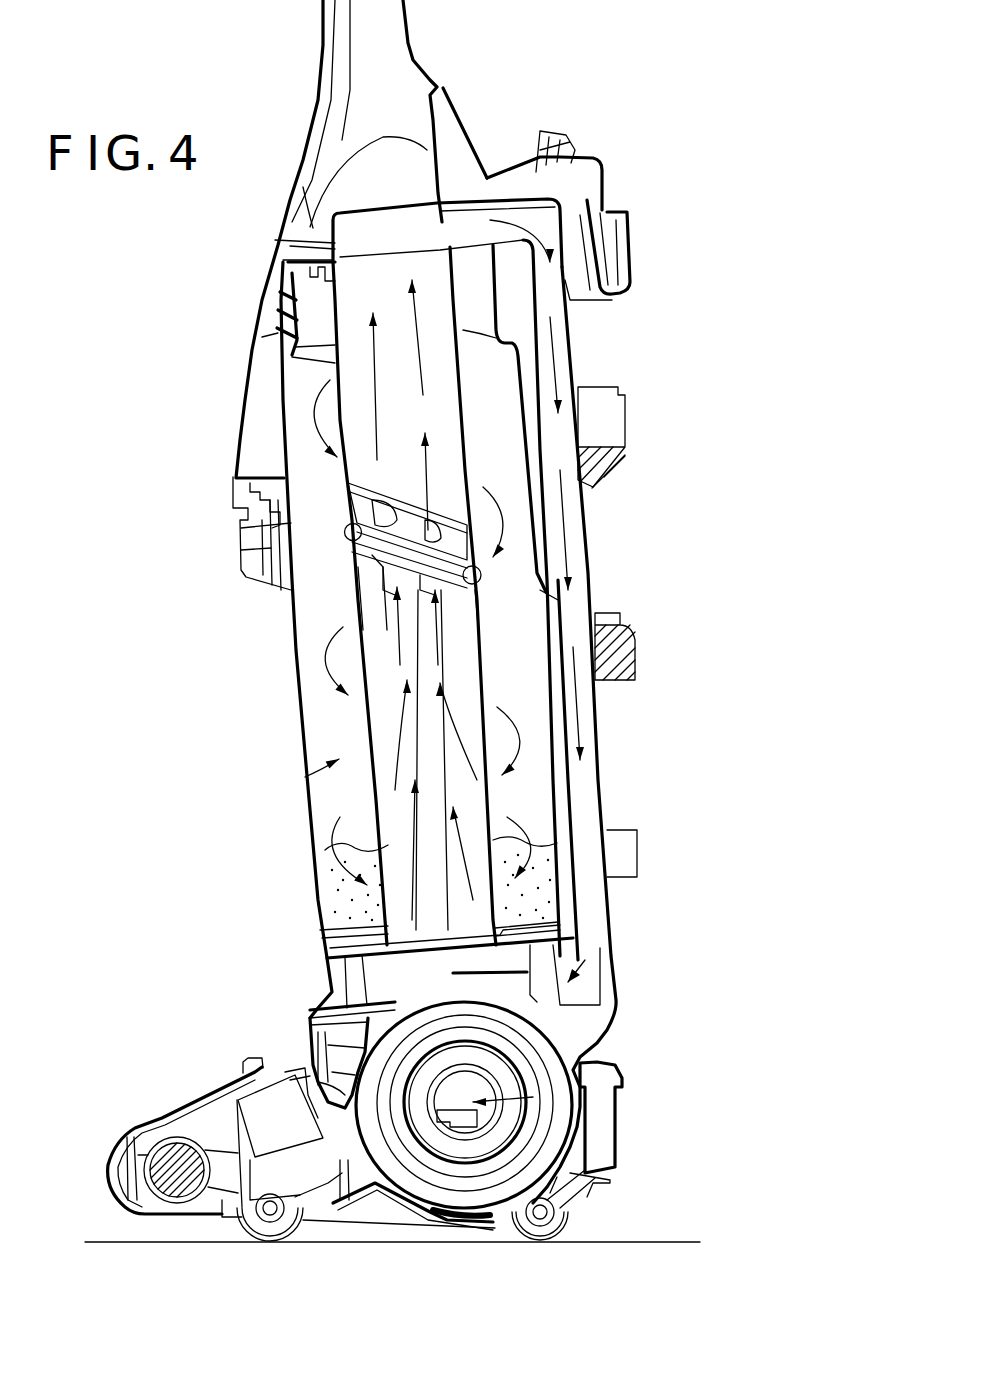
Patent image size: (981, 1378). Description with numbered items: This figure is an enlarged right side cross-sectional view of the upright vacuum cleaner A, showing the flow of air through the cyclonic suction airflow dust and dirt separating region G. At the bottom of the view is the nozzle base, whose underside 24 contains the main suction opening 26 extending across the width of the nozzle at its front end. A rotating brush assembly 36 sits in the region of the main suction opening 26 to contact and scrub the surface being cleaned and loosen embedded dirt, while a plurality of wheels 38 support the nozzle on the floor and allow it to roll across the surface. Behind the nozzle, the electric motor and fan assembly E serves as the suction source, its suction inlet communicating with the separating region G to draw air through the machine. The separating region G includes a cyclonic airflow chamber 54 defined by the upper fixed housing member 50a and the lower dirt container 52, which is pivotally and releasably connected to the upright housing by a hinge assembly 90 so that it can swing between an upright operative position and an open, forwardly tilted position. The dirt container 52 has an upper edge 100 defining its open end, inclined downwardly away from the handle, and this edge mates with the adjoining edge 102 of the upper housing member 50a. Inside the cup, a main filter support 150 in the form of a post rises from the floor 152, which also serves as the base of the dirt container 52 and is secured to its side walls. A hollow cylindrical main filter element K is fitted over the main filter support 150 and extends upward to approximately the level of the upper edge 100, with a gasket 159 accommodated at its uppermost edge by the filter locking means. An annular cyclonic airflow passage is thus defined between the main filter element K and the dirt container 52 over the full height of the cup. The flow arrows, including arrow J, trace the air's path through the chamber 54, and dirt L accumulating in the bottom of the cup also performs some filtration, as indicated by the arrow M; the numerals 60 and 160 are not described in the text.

The air inlet passage 60 is at (477, 228).
The filter housing wall 160 is at (462, 396).
The upper fixed housing member 50a is at (280, 388).
The air flow path J is at (303, 418).
The upper edge 100 is at (522, 590).
The adjoining edge 102 is at (311, 513).
The gasket 159 is at (350, 535).
The main filter element K is at (493, 650).
The dirt container 52 is at (296, 661).
The upright vacuum cleaner A is at (243, 753).
The cyclonic airflow chamber 54 is at (305, 777).
The dirt L is at (540, 842).
The cyclonic suction airflow dust and dirt separating region G is at (296, 868).
The arrow M is at (342, 866).
The floor 152 is at (495, 918).
The main filter support 150 is at (400, 905).
The hinge assembly 90 is at (340, 982).
The electric motor and fan assembly E is at (493, 1077).
The rotating brush assembly 36 is at (175, 1168).
The main suction opening 26 is at (170, 1218).
The wheels 38 is at (255, 1232).
The underside 24 is at (357, 1230).